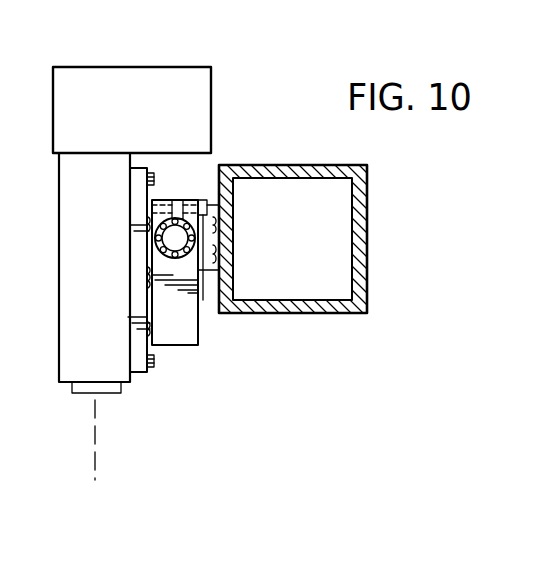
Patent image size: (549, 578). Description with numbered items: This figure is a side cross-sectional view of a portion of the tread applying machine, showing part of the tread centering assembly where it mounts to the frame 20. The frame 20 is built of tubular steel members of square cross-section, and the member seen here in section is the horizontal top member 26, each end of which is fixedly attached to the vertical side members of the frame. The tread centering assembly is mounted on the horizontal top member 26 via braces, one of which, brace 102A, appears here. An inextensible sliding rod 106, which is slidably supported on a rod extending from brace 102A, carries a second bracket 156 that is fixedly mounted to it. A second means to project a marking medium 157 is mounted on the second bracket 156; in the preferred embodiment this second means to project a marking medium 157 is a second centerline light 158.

The second means to project a marking medium 157 is at (150, 64).
The second centerline light 158 is at (193, 68).
The sliding rod 106 is at (181, 219).
The second bracket 156 is at (200, 357).
The brace 102A is at (203, 272).
The frame 20 is at (327, 243).
The horizontal top member 26 is at (368, 245).